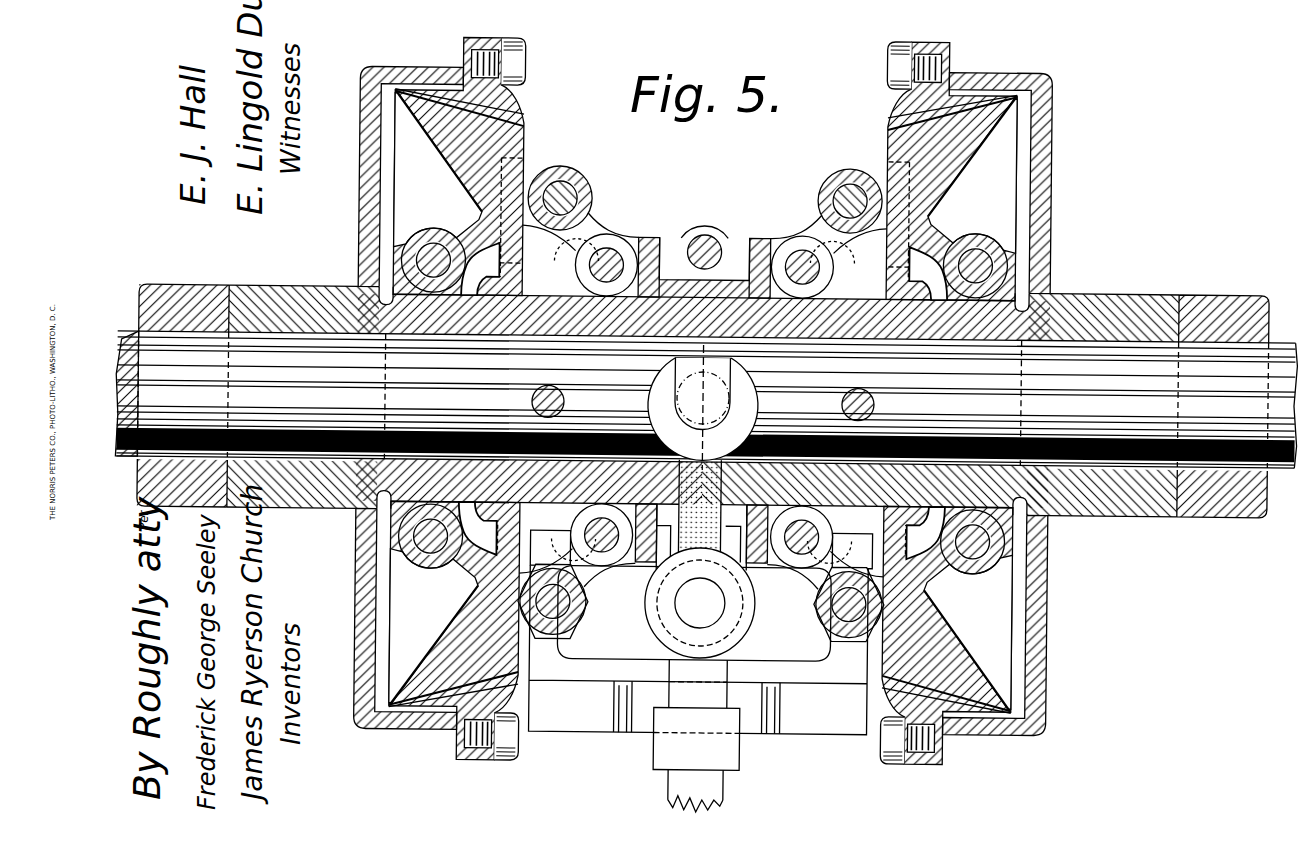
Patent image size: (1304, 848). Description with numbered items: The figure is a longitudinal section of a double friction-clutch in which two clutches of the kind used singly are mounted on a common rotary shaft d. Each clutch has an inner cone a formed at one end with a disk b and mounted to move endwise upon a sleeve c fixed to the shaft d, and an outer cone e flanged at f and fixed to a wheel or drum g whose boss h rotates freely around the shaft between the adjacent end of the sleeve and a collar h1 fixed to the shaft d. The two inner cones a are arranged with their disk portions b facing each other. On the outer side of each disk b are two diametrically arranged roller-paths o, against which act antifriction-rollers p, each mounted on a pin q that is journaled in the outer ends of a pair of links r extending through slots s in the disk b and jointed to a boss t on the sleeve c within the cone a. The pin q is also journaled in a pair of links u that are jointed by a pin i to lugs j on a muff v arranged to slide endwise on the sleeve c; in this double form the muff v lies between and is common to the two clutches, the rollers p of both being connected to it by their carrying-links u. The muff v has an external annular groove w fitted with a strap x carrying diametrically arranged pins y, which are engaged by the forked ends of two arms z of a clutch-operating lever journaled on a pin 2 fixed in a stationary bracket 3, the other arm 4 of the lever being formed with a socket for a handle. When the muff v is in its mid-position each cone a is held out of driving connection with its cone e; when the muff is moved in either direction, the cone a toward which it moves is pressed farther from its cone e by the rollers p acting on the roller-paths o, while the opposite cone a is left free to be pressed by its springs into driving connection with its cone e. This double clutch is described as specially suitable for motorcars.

The inner cone a is at (703, 401).
The disk b is at (885, 525).
The sleeve c is at (703, 400).
The rotary shaft d is at (706, 399).
The outer cone e is at (703, 399).
The flange f is at (920, 762).
The wheel or drum g is at (1049, 595).
The boss h is at (1105, 512).
The collar h1 is at (1228, 290).
The pin i is at (590, 530).
The lugs j is at (807, 267).
The roller-paths o is at (882, 552).
The antifriction-rollers p is at (842, 635).
The pin q is at (705, 199).
The links r is at (703, 403).
The slots or openings s is at (950, 588).
The boss t is at (978, 571).
The links u is at (810, 235).
The muff v is at (760, 565).
The annular groove w is at (671, 270).
The strap x is at (728, 240).
The pins y is at (703, 398).
The arms z is at (702, 453).
The pin 2 is at (699, 602).
The stationary bracket 3 is at (699, 650).
The arm 4 is at (672, 780).